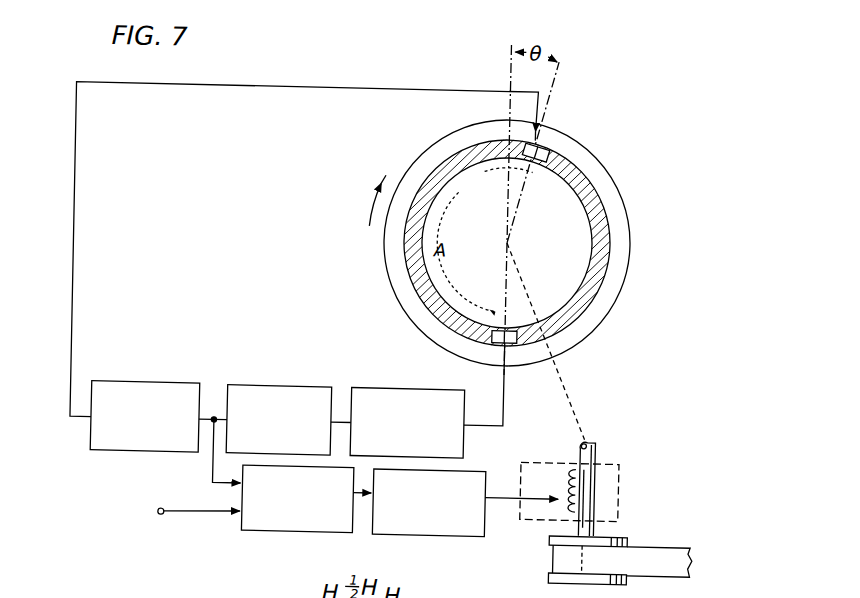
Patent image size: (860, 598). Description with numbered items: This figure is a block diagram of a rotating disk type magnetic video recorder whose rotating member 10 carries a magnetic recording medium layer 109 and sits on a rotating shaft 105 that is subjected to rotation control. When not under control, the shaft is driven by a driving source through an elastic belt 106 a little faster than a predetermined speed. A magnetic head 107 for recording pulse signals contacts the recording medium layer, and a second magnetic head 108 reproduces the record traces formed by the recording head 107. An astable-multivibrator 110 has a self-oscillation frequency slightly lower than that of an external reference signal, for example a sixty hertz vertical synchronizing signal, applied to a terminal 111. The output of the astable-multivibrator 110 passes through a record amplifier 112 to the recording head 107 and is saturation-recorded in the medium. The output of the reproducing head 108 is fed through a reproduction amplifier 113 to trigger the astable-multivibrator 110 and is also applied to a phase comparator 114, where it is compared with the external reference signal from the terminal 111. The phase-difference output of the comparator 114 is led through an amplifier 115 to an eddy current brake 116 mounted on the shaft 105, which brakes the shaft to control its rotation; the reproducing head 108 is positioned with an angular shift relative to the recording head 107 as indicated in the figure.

The rotating ring/drum 10 is at (629, 233).
The rotating shaft 105 is at (601, 446).
The elastic belt 106 is at (649, 552).
The magnetic head 107 is at (512, 346).
The magnetic head 108 is at (547, 140).
The magnetic ring 109 is at (590, 176).
The astable-multivibrator 110 is at (329, 390).
The terminal 111 is at (166, 522).
The record amplifier 112 is at (447, 390).
The reproduction amplifier 113 is at (183, 389).
The phase comparator 114 is at (316, 538).
The amplifier 115 is at (453, 538).
The eddy current brake 116 is at (527, 518).